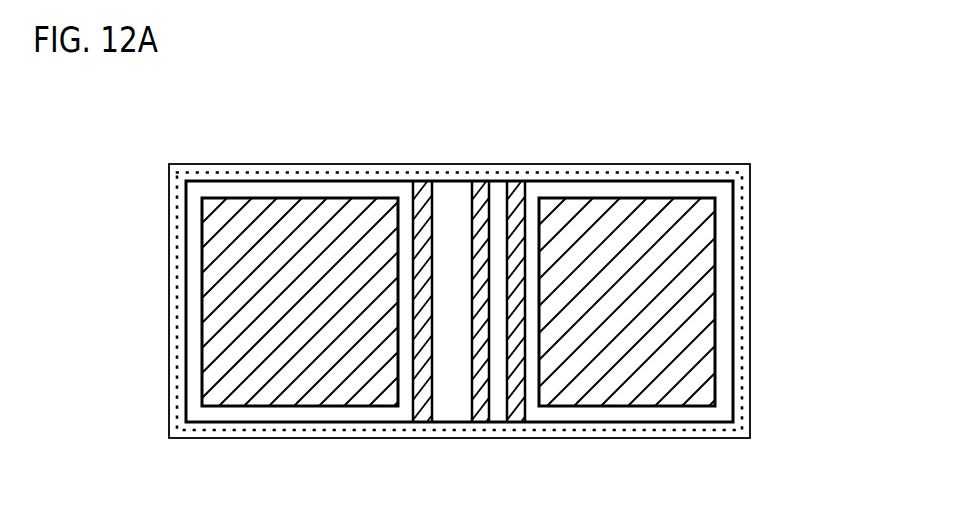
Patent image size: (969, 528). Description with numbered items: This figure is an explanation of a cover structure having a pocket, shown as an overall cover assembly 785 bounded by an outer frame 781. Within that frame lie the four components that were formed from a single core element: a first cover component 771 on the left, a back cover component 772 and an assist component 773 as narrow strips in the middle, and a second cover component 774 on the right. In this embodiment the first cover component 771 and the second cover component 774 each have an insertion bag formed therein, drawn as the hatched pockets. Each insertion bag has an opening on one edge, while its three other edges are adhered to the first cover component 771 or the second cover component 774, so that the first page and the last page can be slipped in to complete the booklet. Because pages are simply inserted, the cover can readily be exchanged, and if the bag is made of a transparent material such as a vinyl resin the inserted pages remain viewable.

The first cover component 771 is at (312, 192).
The back cover component 772 is at (450, 192).
The assist component 773 is at (498, 192).
The second cover component 774 is at (623, 190).
The sealing member 781 is at (738, 200).
The module 785 is at (775, 282).